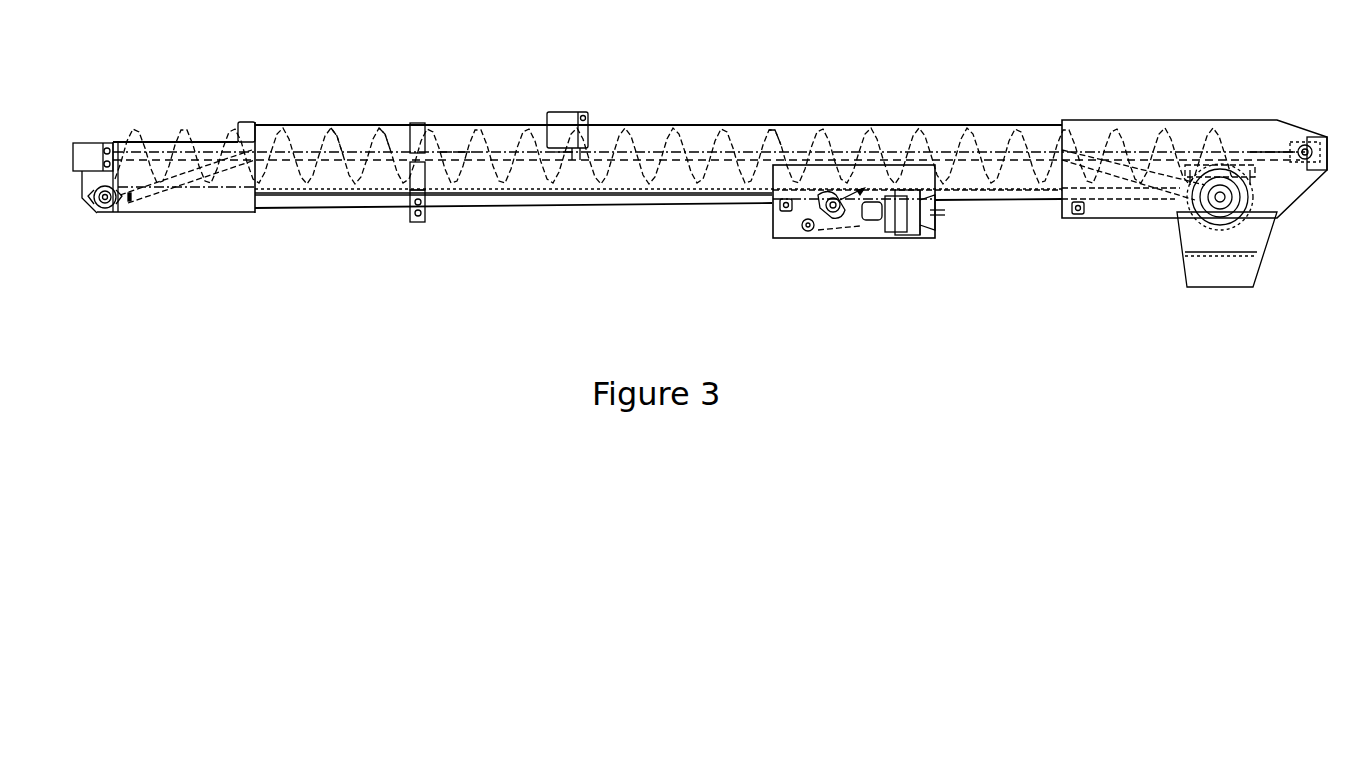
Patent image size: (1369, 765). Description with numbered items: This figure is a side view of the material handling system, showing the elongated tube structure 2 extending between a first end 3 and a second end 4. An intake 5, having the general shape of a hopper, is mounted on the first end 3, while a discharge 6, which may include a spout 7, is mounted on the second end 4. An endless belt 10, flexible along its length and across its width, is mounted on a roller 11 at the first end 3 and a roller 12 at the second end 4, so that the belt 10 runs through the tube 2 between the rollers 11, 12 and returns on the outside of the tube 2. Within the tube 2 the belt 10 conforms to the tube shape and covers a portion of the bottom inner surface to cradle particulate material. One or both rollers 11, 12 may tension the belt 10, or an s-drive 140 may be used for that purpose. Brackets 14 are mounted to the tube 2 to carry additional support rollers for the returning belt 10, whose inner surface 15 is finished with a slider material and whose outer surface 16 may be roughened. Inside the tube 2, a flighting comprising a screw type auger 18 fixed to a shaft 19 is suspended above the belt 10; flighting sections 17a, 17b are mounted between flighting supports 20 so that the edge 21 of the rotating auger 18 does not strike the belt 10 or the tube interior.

The tube structure 2 is at (650, 125).
The first end 3 is at (256, 126).
The second end 4 is at (1062, 125).
The intake 5 is at (132, 92).
The discharge 6 is at (1162, 86).
The spout 7 is at (1253, 234).
The endless belt 10 is at (538, 208).
The roller 11 is at (108, 207).
The roller 12 is at (1203, 212).
The brackets 14 is at (415, 222).
The inner surface 15 is at (474, 200).
The outer surface 16 is at (495, 209).
The flighting section 17a is at (342, 122).
The flighting section 17b is at (785, 122).
The screw type auger 18 is at (383, 137).
The shaft 19 is at (457, 153).
The flighting supports 20 is at (553, 115).
The edge 21 is at (183, 130).
The s-drive 140 is at (858, 258).